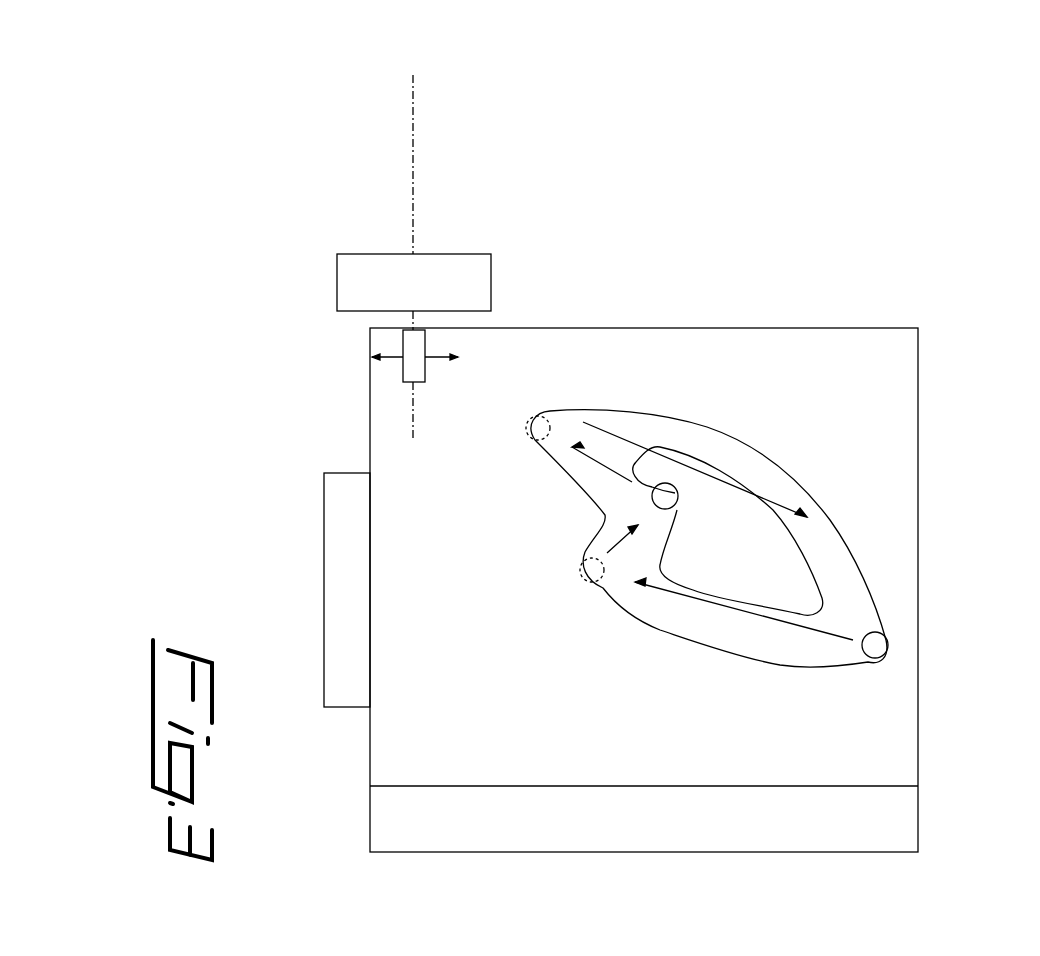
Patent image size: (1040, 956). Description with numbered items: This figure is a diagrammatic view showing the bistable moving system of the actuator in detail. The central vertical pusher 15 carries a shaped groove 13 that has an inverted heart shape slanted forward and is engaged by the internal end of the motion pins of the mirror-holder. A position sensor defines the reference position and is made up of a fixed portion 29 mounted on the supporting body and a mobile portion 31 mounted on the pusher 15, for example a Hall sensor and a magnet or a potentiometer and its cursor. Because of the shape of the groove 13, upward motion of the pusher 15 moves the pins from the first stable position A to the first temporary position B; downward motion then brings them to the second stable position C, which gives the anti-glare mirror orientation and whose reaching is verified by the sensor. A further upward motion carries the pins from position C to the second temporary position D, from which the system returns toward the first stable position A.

The shaped groove 13 is at (743, 630).
The central vertical pusher 15 is at (853, 355).
The fixed portion of position sensor 29 is at (372, 273).
The mobile portion of position sensor 31 is at (412, 364).
The first stable position A is at (667, 494).
The first temporary position B is at (538, 418).
The second stable position C is at (872, 645).
The second temporary position D is at (585, 582).